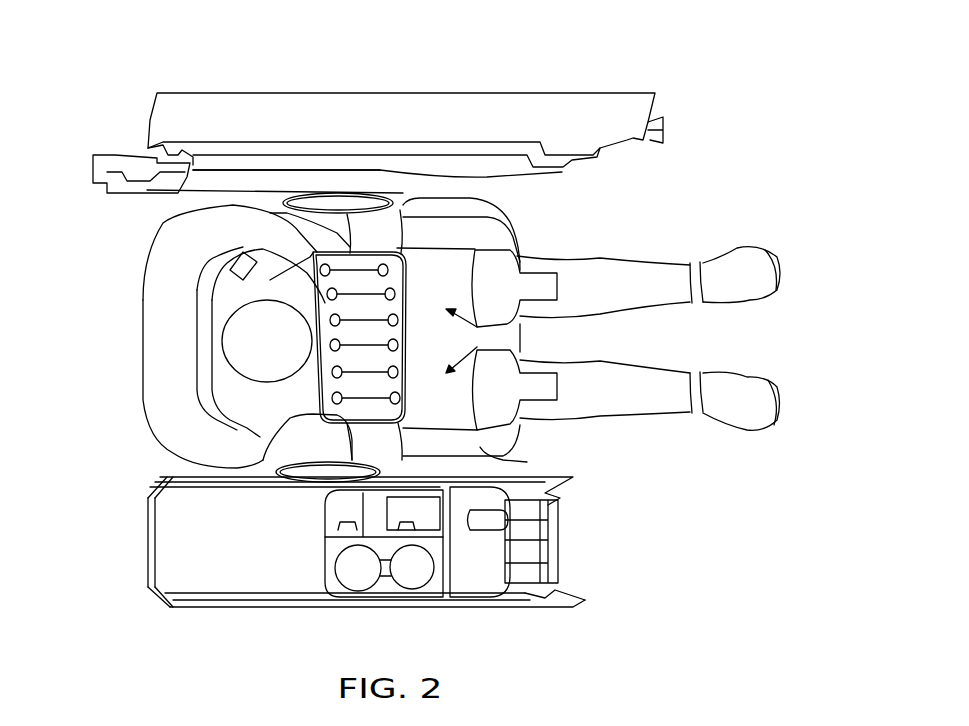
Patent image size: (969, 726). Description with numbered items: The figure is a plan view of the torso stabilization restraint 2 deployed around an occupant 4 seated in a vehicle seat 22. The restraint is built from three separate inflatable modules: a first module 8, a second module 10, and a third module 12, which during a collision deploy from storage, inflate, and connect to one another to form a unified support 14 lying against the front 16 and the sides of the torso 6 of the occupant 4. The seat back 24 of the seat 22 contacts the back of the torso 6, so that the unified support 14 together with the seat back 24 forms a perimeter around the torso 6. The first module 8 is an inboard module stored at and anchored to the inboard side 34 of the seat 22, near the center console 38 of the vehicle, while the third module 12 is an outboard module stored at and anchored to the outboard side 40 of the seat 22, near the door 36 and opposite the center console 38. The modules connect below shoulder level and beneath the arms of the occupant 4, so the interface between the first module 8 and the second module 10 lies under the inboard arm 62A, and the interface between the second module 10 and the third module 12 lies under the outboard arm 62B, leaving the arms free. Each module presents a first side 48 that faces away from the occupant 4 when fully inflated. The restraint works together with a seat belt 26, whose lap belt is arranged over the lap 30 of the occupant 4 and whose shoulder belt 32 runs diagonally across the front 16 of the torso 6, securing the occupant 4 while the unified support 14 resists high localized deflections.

The torso stabilization restraint 2 is at (578, 212).
The occupant 4 is at (642, 273).
The torso 6 is at (293, 395).
The first module 8 is at (303, 500).
The second module 10 is at (388, 242).
The third module 12 is at (323, 200).
The unified support 14 is at (345, 188).
The front 16 is at (304, 252).
The vehicle seat 22 is at (518, 461).
The seat back 24 is at (153, 347).
The seat belt 26 is at (250, 255).
The shoulder belt 32 is at (243, 266).
The lap 30 is at (405, 344).
The inboard side 34 is at (183, 463).
The door 36 is at (545, 110).
The center console 38 is at (227, 577).
The outboard side 40 is at (180, 226).
The first side 48 is at (393, 393).
The inboard arm 62A is at (378, 453).
The outboard arm 62B is at (383, 217).